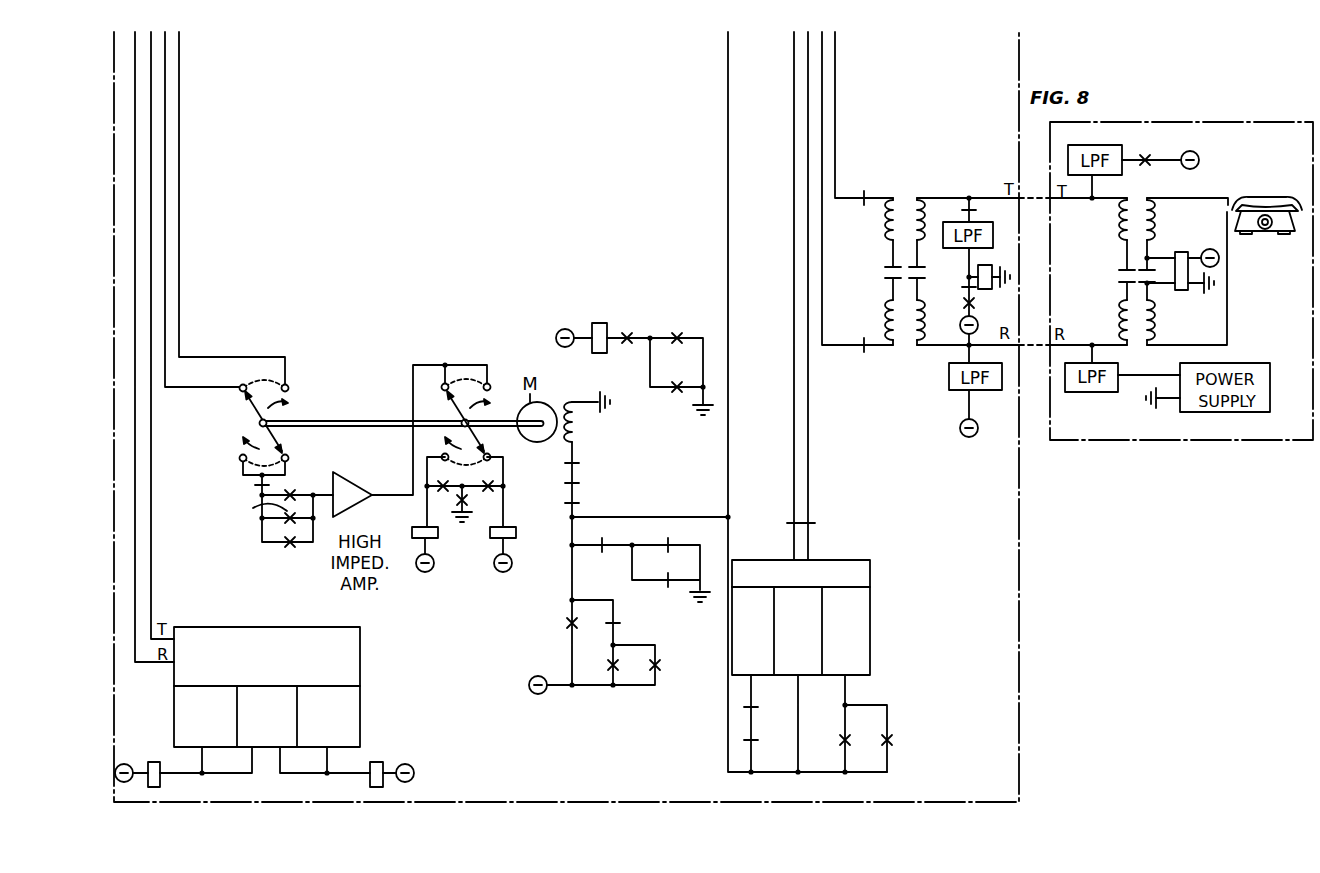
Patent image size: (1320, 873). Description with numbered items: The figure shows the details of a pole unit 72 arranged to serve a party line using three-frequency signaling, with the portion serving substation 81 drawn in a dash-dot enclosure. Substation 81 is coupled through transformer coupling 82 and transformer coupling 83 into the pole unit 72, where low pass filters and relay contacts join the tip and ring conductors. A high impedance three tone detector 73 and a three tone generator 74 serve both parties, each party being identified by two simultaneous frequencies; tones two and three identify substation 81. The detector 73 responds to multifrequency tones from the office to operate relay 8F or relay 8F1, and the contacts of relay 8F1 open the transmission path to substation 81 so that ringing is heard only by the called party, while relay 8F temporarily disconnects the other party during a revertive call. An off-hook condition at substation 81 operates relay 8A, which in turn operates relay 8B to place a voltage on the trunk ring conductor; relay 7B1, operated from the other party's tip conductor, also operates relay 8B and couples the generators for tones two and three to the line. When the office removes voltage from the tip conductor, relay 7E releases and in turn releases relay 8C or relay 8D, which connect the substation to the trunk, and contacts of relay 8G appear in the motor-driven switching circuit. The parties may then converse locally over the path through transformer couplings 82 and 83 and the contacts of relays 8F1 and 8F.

The relay 8A is at (1163, 210).
The relay 8B is at (462, 474).
The relay 8C is at (492, 490).
The relay 8D is at (440, 488).
The relay 8F is at (967, 289).
The relay 8F1 is at (852, 748).
The relay 8G is at (460, 402).
The relay 7E is at (464, 500).
The relay 7B1 is at (980, 307).
The pole unit 72 is at (1019, 505).
The three tone detector 73 is at (360, 713).
The three tone generator 74 is at (870, 623).
The substation 81 is at (1267, 201).
The transformer coupling 82 is at (1119, 277).
The transformer coupling 83 is at (885, 273).